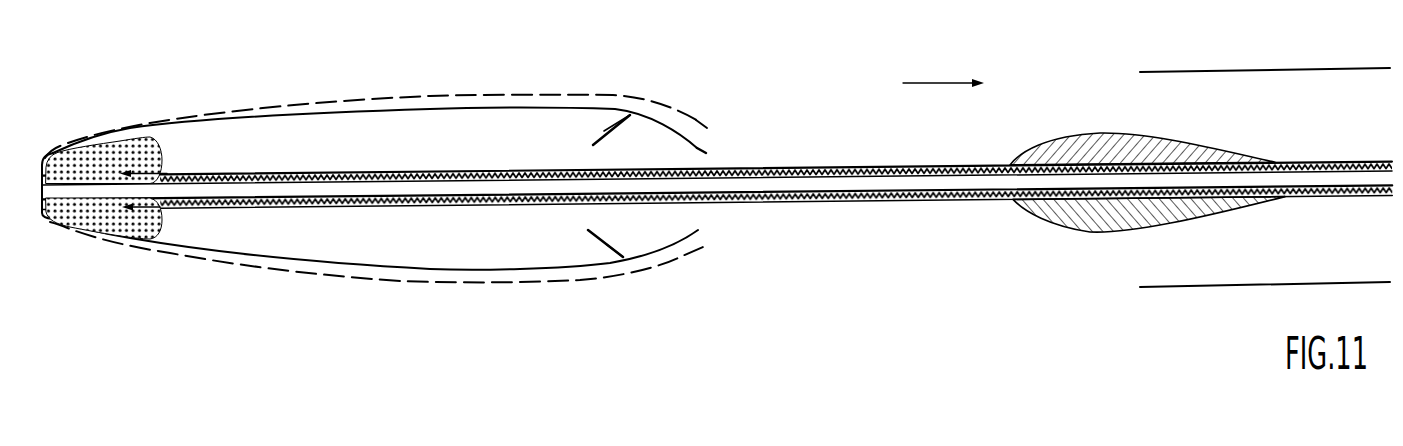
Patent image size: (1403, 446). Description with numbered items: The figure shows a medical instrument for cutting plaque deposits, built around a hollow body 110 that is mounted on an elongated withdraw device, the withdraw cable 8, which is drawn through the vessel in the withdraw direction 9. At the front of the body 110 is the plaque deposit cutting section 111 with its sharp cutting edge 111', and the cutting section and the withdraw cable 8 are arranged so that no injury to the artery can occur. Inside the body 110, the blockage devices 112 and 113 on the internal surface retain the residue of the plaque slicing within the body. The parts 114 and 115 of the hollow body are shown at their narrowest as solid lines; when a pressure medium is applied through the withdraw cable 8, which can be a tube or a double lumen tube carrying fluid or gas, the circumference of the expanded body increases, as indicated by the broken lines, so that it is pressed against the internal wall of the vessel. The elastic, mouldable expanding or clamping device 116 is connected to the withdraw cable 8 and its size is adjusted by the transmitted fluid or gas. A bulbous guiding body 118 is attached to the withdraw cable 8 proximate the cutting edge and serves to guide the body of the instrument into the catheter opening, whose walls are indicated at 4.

The bow 4 is at (1183, 288).
The withdraw cable 8 is at (888, 204).
The withdraw direction 9 is at (943, 66).
The body 110 is at (298, 296).
The cutting section 111 is at (752, 106).
The sharp cutting edge 111' is at (751, 143).
The blockage device 112 is at (604, 131).
The blockage device 113 is at (606, 244).
The part of the hollow body 114 is at (493, 108).
The part of the hollow body 115 is at (415, 268).
The clamping device 116 is at (110, 153).
The guiding body 118 is at (1073, 218).